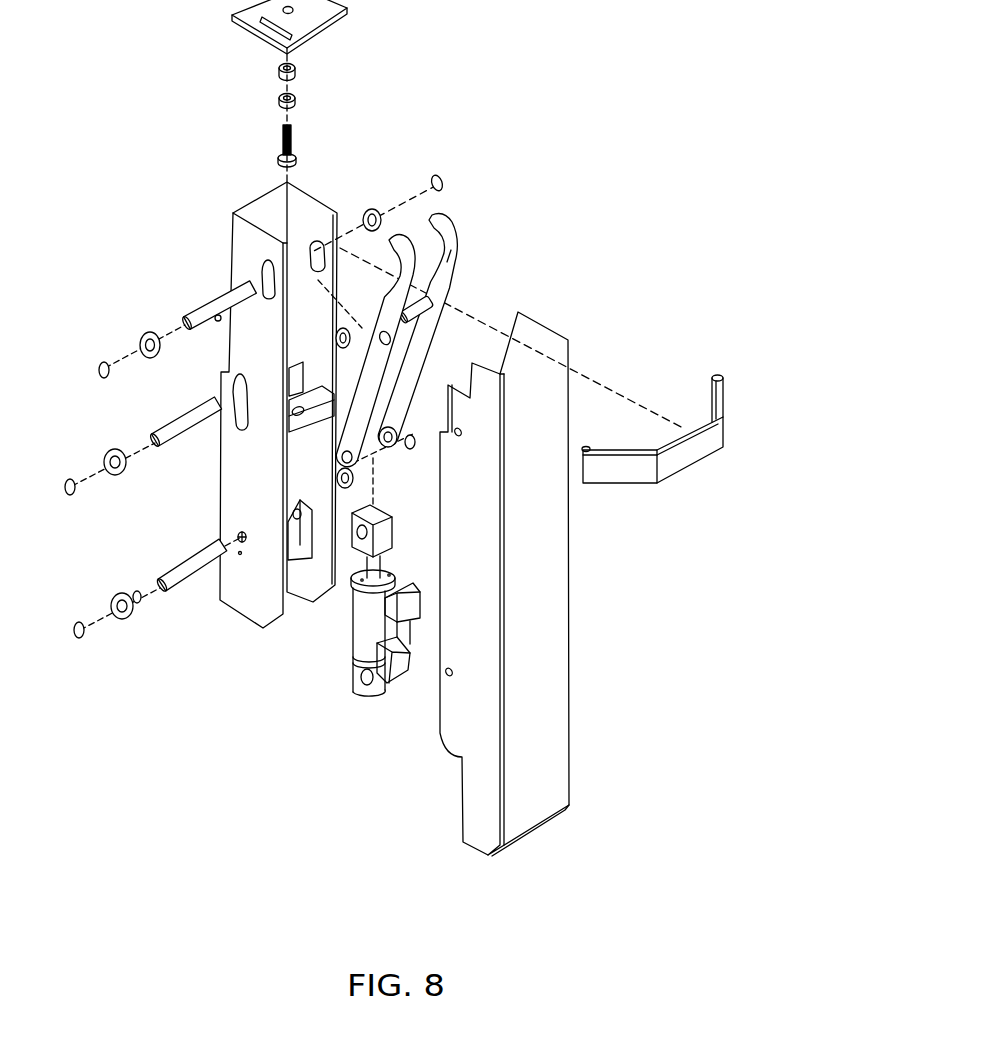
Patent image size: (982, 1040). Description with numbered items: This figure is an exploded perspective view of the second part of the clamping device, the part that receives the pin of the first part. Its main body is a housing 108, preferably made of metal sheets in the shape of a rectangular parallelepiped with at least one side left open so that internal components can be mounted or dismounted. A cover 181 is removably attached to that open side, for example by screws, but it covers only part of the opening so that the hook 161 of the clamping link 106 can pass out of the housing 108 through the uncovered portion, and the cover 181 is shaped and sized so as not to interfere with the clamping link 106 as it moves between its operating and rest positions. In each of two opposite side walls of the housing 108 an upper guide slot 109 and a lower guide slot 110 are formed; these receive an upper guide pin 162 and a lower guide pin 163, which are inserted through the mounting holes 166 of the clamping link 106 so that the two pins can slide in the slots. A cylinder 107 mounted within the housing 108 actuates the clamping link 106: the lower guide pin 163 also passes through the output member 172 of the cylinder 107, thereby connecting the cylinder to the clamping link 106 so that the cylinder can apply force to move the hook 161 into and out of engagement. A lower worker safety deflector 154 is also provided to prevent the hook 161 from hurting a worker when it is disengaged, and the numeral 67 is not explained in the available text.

The pivot boss 67 is at (390, 422).
The clamping link 106 is at (440, 342).
The cylinder 107 is at (347, 630).
The housing 108 is at (316, 197).
The upper guide slot 109 is at (258, 280).
The lower guide slot 110 is at (218, 440).
The lower worker safety deflector 154 is at (705, 437).
The hook 161 is at (453, 215).
The upper guide pin 162 is at (225, 295).
The lower guide pin 163 is at (183, 417).
The mounting holes 166 is at (385, 338).
The output member 172 is at (380, 517).
The cover 181 is at (540, 640).